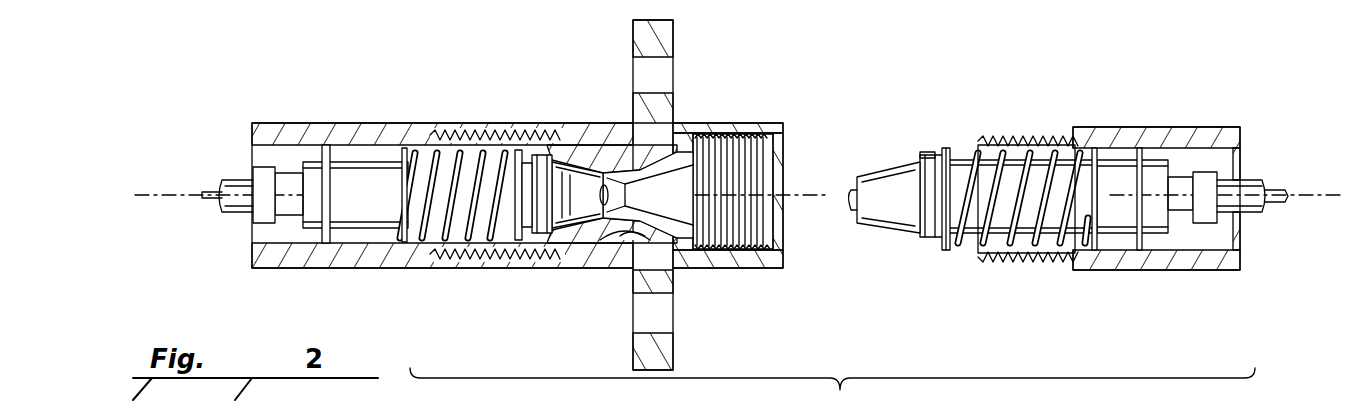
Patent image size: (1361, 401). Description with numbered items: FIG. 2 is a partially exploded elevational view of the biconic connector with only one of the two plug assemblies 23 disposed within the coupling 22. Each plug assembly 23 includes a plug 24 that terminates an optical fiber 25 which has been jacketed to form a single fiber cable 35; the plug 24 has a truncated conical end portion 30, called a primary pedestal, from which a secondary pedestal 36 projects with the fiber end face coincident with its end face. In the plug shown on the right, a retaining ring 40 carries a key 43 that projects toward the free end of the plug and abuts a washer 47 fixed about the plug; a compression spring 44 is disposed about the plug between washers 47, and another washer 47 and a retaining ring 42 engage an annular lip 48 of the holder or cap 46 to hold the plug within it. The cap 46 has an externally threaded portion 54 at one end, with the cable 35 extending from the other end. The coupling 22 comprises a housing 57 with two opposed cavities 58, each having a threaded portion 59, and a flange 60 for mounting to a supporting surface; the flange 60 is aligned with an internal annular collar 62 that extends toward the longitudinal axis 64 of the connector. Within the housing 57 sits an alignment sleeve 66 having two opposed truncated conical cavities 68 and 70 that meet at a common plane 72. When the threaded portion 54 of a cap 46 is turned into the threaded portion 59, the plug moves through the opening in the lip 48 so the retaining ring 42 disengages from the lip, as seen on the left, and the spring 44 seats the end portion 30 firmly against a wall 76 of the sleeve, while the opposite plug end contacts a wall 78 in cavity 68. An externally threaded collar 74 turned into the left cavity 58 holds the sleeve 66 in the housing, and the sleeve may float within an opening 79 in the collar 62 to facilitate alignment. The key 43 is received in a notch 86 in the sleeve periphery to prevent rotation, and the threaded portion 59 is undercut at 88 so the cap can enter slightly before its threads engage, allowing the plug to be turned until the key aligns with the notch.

The coupling 22 is at (447, 272).
The plug assembly 23 is at (746, 183).
The plug 24 is at (870, 227).
The optical fiber 25 is at (205, 207).
The end portion 30 is at (882, 172).
The single fiber cable 35 is at (228, 180).
The secondary pedestal 36 is at (847, 195).
The retaining ring 40 is at (542, 235).
The retaining ring 42 is at (325, 150).
The key 43 is at (518, 150).
The compression spring 44 is at (947, 250).
The cap 46 is at (1157, 127).
The washer 47 is at (397, 198).
The annular lip 48 is at (405, 150).
The externally threaded portion 54 is at (1017, 140).
The housing 57 is at (758, 189).
The cavity 58 is at (772, 220).
The threaded portion 59 is at (760, 147).
The flange 60 is at (667, 355).
The annular collar 62 is at (675, 258).
The longitudinal axis 64 is at (150, 190).
The alignment sleeve 66 is at (603, 155).
The cavity 68 is at (670, 173).
The cavity 70 is at (667, 143).
The common plane 72 is at (637, 150).
The externally threaded collar 74 is at (546, 160).
The wall 76 is at (572, 172).
The wall 78 is at (610, 225).
The opening 79 is at (628, 240).
The notch 86 is at (703, 127).
The undercut 88 is at (775, 250).